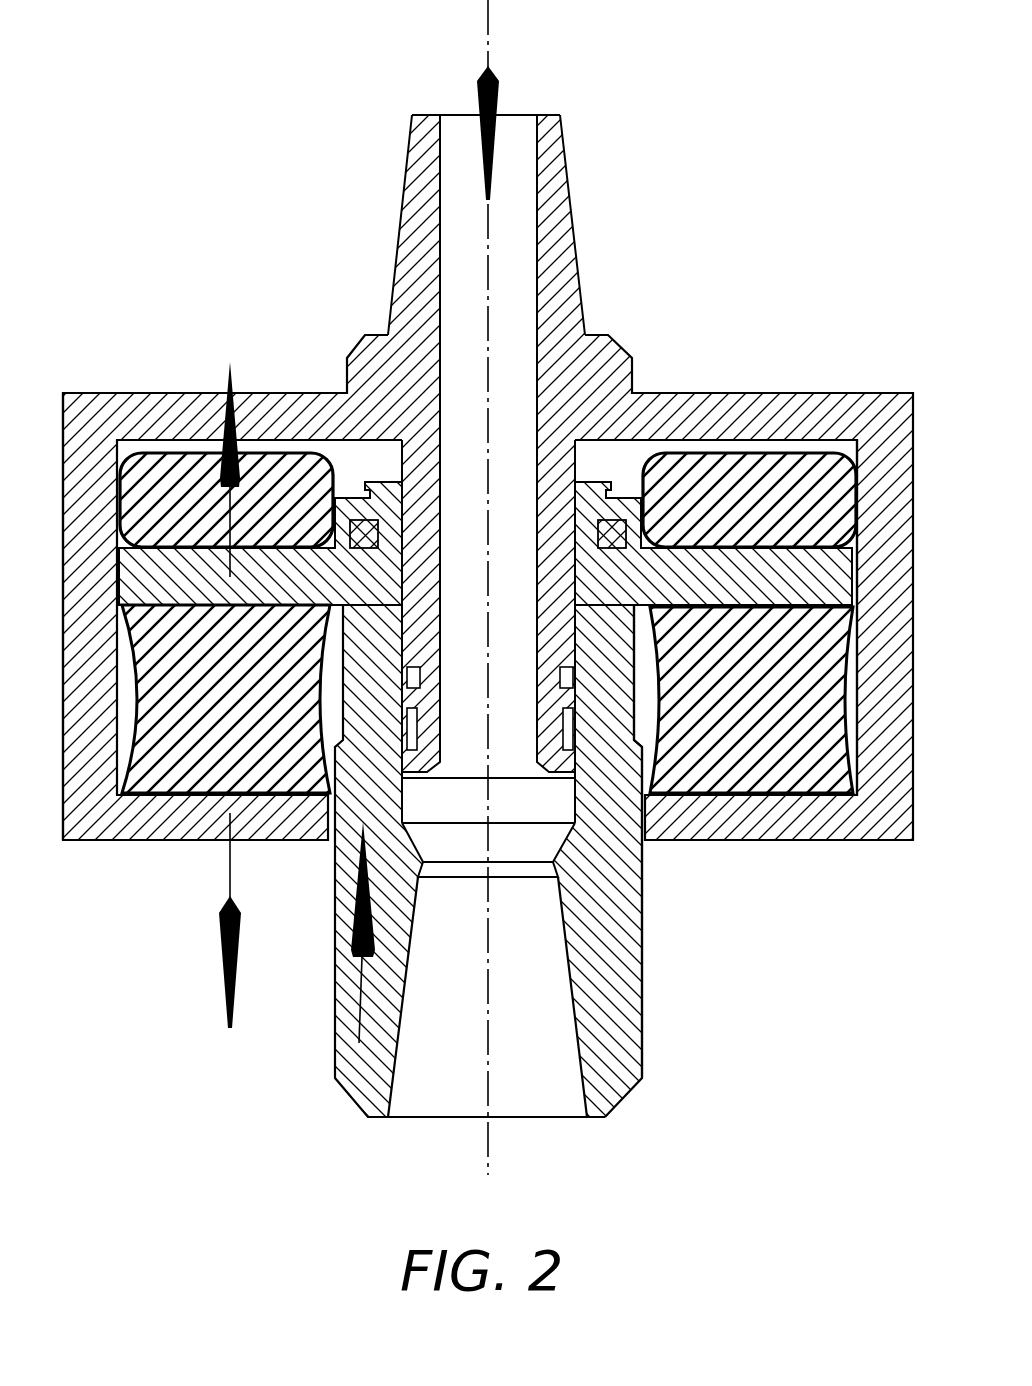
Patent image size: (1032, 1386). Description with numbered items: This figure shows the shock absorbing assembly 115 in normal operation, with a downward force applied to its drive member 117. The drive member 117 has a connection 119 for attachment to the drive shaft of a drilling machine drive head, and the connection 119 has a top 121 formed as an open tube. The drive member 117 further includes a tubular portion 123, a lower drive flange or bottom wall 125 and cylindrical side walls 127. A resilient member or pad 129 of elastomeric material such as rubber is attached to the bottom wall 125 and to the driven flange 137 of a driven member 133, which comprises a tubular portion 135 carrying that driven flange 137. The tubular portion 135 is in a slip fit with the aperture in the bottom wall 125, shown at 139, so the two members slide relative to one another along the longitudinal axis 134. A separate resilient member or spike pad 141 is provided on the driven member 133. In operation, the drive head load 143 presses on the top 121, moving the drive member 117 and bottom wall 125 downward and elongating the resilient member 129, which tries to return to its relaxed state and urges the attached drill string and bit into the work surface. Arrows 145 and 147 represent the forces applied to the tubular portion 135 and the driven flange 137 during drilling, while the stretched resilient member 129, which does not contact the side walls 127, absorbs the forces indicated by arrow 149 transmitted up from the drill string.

The shock absorbing assembly 115 is at (749, 210).
The drive member 117 is at (323, 384).
The connection 119 is at (583, 212).
The top 121 is at (448, 115).
The tubular portion 123 is at (580, 458).
The lower drive flange or bottom wall 125 is at (747, 817).
The cylindrical side walls 127 is at (57, 693).
The resilient member or pad 129 is at (180, 727).
The driven member 133 is at (324, 874).
The longitudinal axis 134 is at (490, 1143).
The tubular portion 135 is at (610, 1052).
The driven flange 137 is at (770, 577).
The slip fit 139 is at (653, 855).
The resilient member or spike pad 141 is at (712, 503).
The drive head load 143 is at (497, 88).
The arrow 145 is at (226, 370).
The arrow 147 is at (222, 975).
The arrow 149 is at (332, 982).